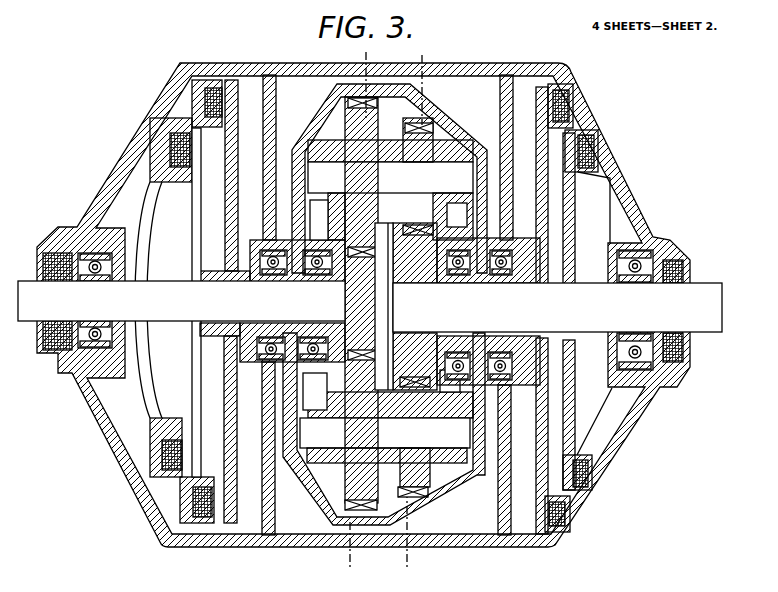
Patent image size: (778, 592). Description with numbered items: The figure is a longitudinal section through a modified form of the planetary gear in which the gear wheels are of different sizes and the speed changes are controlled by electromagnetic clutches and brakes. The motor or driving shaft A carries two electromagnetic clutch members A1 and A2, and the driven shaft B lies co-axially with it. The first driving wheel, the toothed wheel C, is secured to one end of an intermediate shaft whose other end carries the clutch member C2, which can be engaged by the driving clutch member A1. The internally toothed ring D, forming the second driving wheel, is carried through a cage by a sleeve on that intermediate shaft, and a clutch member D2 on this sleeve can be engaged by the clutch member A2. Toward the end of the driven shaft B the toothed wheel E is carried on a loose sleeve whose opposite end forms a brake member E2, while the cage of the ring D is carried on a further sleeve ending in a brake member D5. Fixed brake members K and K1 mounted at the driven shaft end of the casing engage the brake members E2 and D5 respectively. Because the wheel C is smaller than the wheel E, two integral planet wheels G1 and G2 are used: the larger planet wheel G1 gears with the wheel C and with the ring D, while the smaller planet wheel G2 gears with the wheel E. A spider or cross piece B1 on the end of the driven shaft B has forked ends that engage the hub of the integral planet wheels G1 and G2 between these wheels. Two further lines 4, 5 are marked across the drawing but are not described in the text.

The section line 4- 4 is at (353, 314).
The section line 5- 5 is at (417, 314).
The internally toothed ring D is at (367, 97).
The clutch member D2 is at (224, 472).
The brake member D5 is at (540, 92).
The brake member K1 is at (570, 96).
The brake member K is at (592, 145).
The brake member E2 is at (577, 205).
The driving shaft A is at (181, 301).
The driven shaft B is at (557, 307).
The spider or cross piece B1 is at (388, 265).
The toothed wheel C is at (340, 332).
The toothed wheel E is at (430, 350).
The clutch member C2 is at (192, 378).
The clutch member A1 is at (157, 468).
The clutch member A2 is at (193, 498).
The planet wheel G1 is at (350, 490).
The planet wheel G2 is at (427, 480).